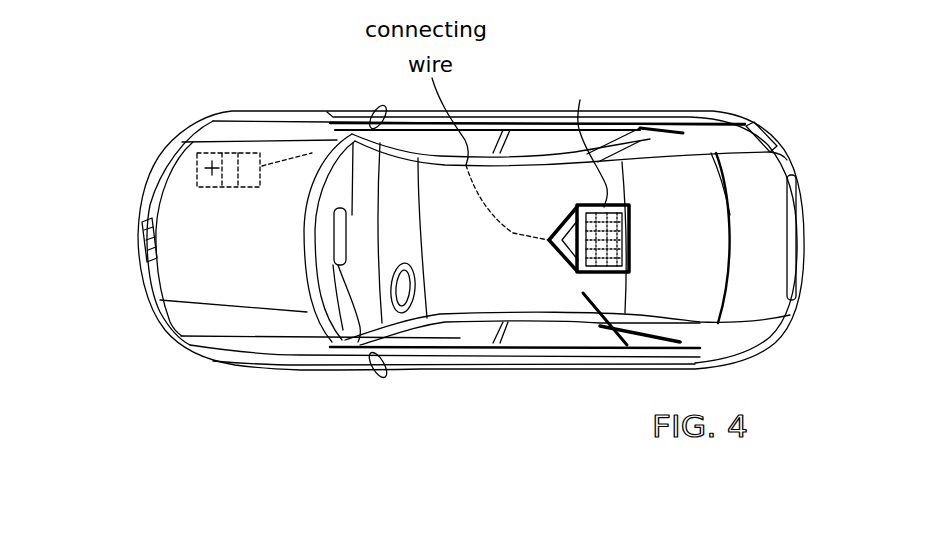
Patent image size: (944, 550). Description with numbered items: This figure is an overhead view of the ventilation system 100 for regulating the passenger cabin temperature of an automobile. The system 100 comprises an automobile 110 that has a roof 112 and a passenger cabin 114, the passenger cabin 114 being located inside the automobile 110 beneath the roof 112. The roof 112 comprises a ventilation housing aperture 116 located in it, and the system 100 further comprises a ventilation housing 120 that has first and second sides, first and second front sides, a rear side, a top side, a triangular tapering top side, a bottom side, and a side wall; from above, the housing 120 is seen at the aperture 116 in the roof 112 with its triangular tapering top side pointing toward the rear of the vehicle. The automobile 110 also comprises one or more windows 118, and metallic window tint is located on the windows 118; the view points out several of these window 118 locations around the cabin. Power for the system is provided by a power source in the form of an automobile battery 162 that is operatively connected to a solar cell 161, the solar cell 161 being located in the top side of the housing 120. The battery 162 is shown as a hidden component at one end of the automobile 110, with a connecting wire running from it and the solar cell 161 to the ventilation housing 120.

The ventilation system 100 is at (125, 103).
The automobile 110 is at (312, 362).
The roof 112 is at (602, 294).
The passenger cabin 114 is at (481, 328).
The ventilation housing aperture 116 is at (630, 247).
The window 118 is at (550, 240).
The ventilation housing 120 is at (631, 193).
The solar cell 161 is at (580, 100).
The automobile battery 162 is at (220, 153).